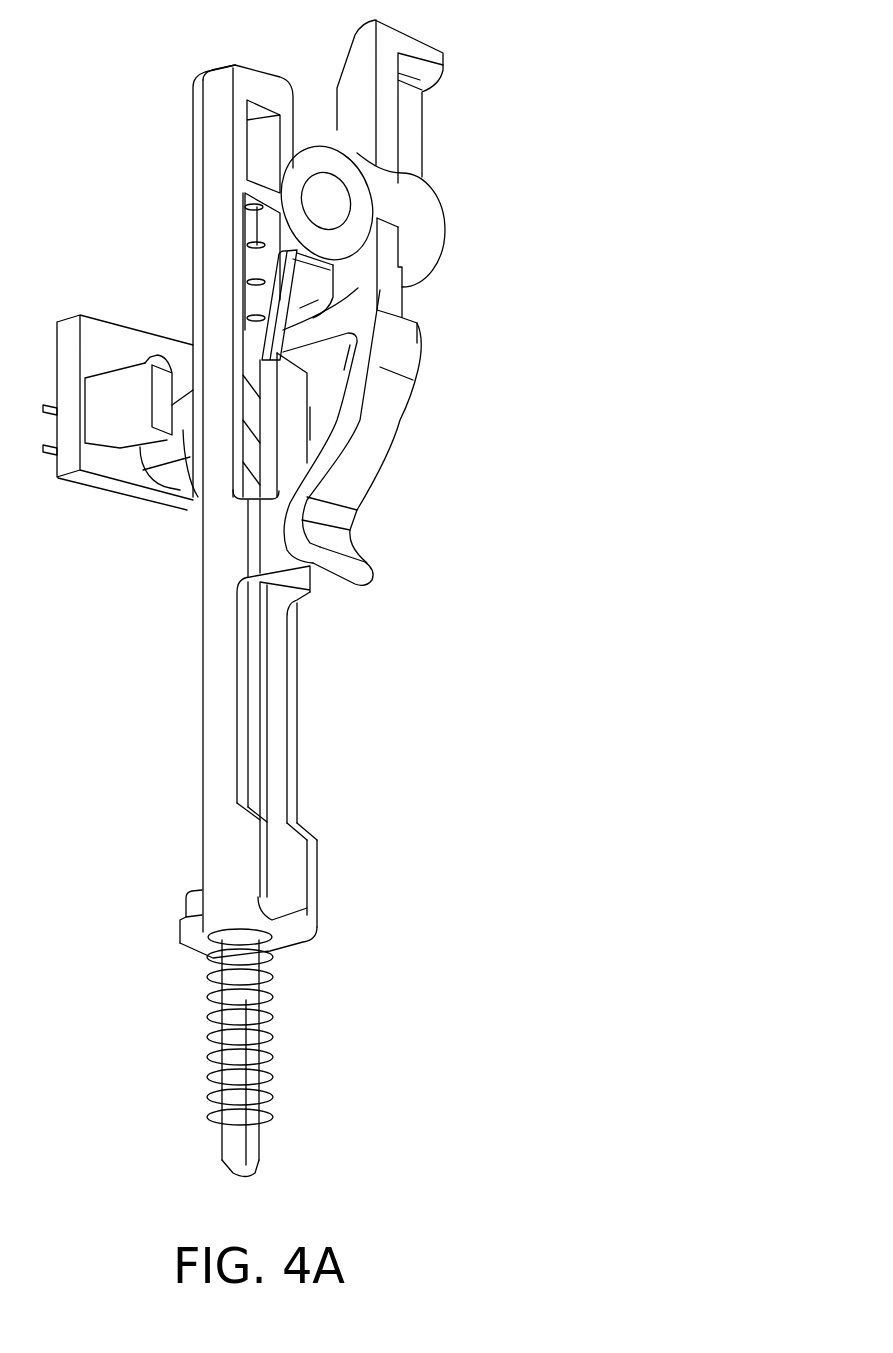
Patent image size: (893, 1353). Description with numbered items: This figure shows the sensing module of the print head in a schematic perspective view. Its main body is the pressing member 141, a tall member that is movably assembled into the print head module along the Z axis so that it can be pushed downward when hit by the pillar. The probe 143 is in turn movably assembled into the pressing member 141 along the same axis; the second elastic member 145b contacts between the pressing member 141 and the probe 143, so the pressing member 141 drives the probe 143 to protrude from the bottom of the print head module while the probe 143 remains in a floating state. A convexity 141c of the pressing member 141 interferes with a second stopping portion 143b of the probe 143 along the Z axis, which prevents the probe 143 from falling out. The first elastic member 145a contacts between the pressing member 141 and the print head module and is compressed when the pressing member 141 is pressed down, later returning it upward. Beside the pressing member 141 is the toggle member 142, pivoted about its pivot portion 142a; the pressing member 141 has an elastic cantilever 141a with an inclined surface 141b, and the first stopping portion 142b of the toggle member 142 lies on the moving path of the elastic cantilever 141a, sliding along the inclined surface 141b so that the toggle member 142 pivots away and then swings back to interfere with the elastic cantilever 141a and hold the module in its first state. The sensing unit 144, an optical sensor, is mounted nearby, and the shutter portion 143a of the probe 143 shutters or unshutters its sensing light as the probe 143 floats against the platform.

The pressing member 141 is at (200, 123).
The elastic cantilever 141a is at (273, 333).
The inclined surface 141b is at (310, 296).
The convexity 141c is at (187, 936).
The toggle member 142 is at (412, 352).
The pivot portion 142a is at (437, 208).
The first stopping portion 142b is at (330, 360).
The probe 143 is at (250, 1145).
The shutter portion 143a is at (187, 427).
The second stopping portion 143b is at (190, 898).
The sensing unit 144 is at (107, 427).
The first elastic member 145a is at (275, 1019).
The second elastic member 145b is at (271, 274).